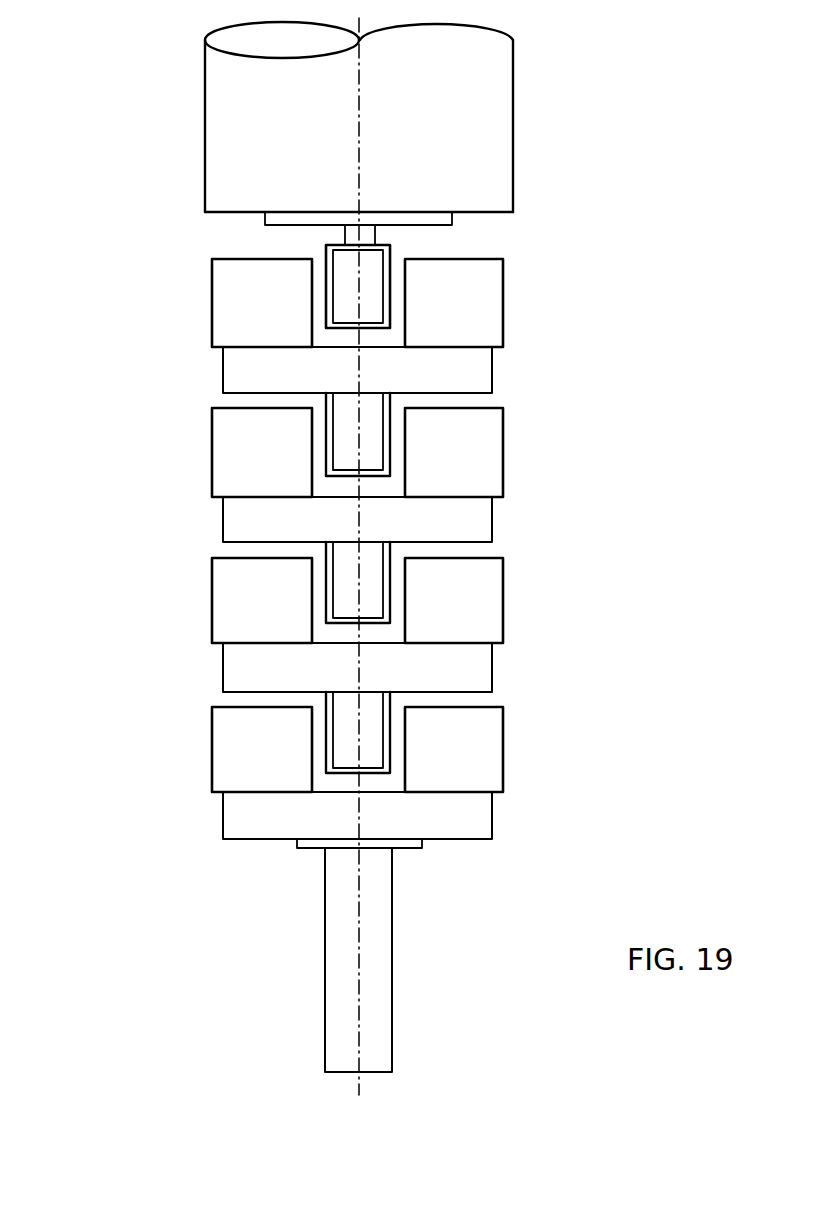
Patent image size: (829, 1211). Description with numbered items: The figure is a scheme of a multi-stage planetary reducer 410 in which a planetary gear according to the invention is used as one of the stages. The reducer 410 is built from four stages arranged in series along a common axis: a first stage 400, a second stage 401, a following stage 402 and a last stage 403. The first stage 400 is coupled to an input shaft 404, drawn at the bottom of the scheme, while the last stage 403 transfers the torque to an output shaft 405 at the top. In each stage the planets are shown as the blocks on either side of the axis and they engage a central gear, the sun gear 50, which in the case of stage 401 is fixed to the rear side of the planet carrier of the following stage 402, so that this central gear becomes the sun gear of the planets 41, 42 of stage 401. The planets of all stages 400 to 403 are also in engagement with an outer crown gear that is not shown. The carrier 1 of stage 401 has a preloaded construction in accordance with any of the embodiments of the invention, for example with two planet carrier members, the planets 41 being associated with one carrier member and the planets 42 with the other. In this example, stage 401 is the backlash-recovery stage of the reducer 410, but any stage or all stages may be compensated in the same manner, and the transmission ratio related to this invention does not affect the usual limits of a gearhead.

The carrier 1 is at (520, 677).
The output shaft 405 is at (343, 229).
The multi-stage reducer 410 is at (594, 359).
The last stage 403 is at (150, 350).
The following stage 402 is at (145, 495).
The backlash-recovery stage 401 is at (142, 639).
The first stage 400 is at (172, 773).
The sun gear 50 is at (377, 580).
The planets 41 is at (488, 608).
The planets 42 is at (454, 600).
The input shaft 404 is at (328, 932).